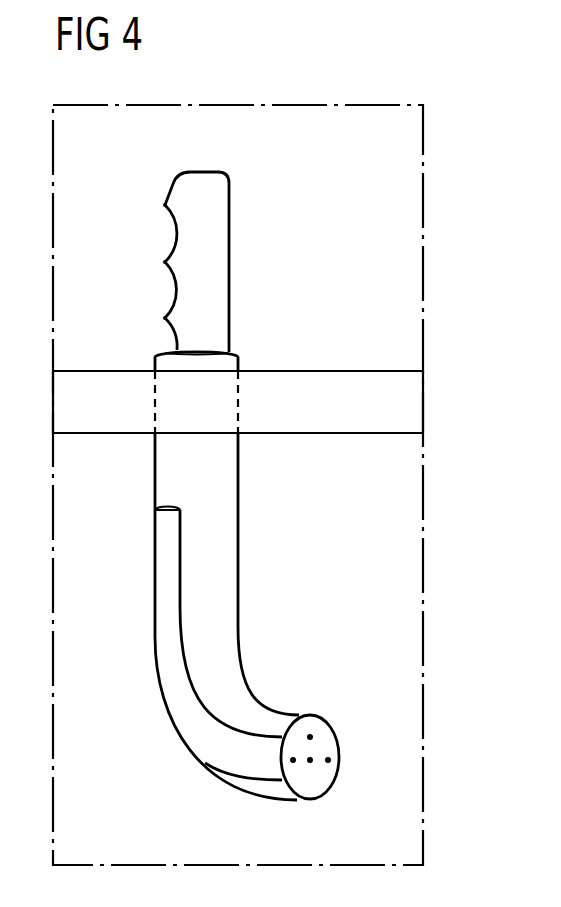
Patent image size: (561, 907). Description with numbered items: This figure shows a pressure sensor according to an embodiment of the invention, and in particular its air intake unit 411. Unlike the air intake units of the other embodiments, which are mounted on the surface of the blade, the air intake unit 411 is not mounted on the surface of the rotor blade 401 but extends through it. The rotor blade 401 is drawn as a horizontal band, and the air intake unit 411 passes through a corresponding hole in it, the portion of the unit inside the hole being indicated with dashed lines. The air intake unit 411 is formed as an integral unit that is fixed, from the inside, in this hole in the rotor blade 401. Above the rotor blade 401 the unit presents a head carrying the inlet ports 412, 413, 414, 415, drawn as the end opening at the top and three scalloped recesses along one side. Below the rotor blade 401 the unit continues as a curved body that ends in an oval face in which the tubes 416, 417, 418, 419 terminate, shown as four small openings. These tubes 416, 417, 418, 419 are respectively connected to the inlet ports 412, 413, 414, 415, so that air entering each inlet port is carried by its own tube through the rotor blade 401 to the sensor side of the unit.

The rotor blade 401 is at (414, 398).
The air intake unit 411 is at (241, 602).
The inlet port 412 is at (167, 241).
The inlet port 413 is at (165, 205).
The inlet port 414 is at (165, 262).
The inlet port 415 is at (165, 318).
The tube 416 is at (312, 737).
The tube 417 is at (294, 763).
The tube 418 is at (312, 762).
The tube 419 is at (330, 760).